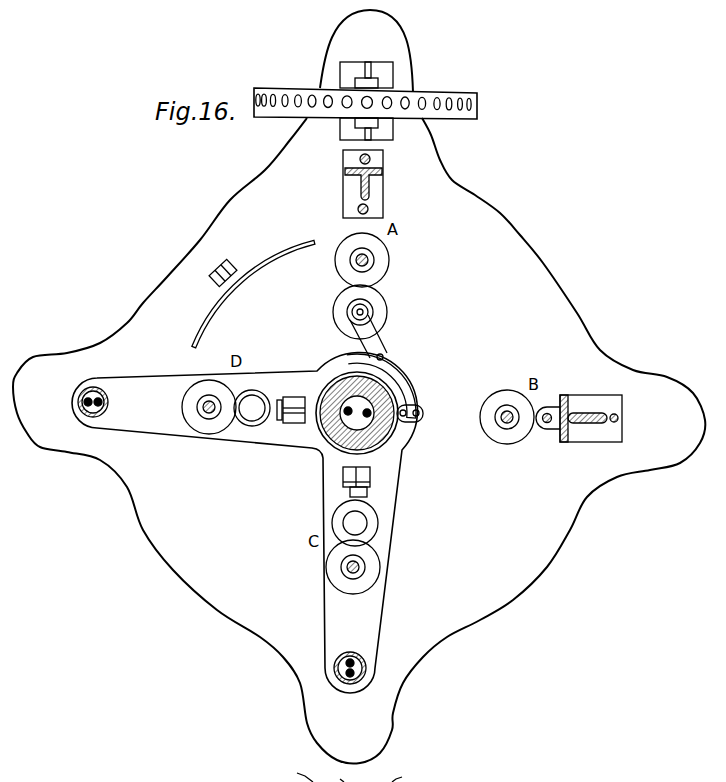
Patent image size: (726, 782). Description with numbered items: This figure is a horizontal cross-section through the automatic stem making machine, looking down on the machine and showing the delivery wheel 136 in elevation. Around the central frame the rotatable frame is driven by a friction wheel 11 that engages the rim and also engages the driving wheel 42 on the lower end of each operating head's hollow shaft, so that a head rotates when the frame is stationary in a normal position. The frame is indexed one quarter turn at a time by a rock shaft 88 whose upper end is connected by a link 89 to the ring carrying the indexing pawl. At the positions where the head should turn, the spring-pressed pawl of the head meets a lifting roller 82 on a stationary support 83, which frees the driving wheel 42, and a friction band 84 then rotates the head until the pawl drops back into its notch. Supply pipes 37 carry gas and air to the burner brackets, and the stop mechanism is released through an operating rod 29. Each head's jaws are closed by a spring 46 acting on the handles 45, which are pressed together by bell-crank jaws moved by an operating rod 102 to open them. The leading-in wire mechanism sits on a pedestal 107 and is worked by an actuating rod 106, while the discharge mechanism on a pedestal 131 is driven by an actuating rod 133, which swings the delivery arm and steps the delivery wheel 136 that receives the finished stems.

The delivery wheel 136 is at (477, 96).
The actuating rod 133 is at (368, 159).
The pedestal 131 is at (369, 187).
The operating rod 102 is at (367, 210).
The driving wheel 42 is at (388, 258).
The rock shaft 88 is at (363, 312).
The link 89 is at (397, 365).
The friction band 84 is at (267, 262).
The friction wheel 11 is at (252, 403).
The stationary support 83 is at (300, 398).
The lifting roller 82 is at (279, 420).
The supply pipes 37 is at (357, 413).
The operating rod 29 is at (546, 423).
The pedestal 107 is at (595, 398).
The actuating rod 106 is at (618, 418).
The handles 45 is at (351, 773).
The spring 46 is at (334, 774).